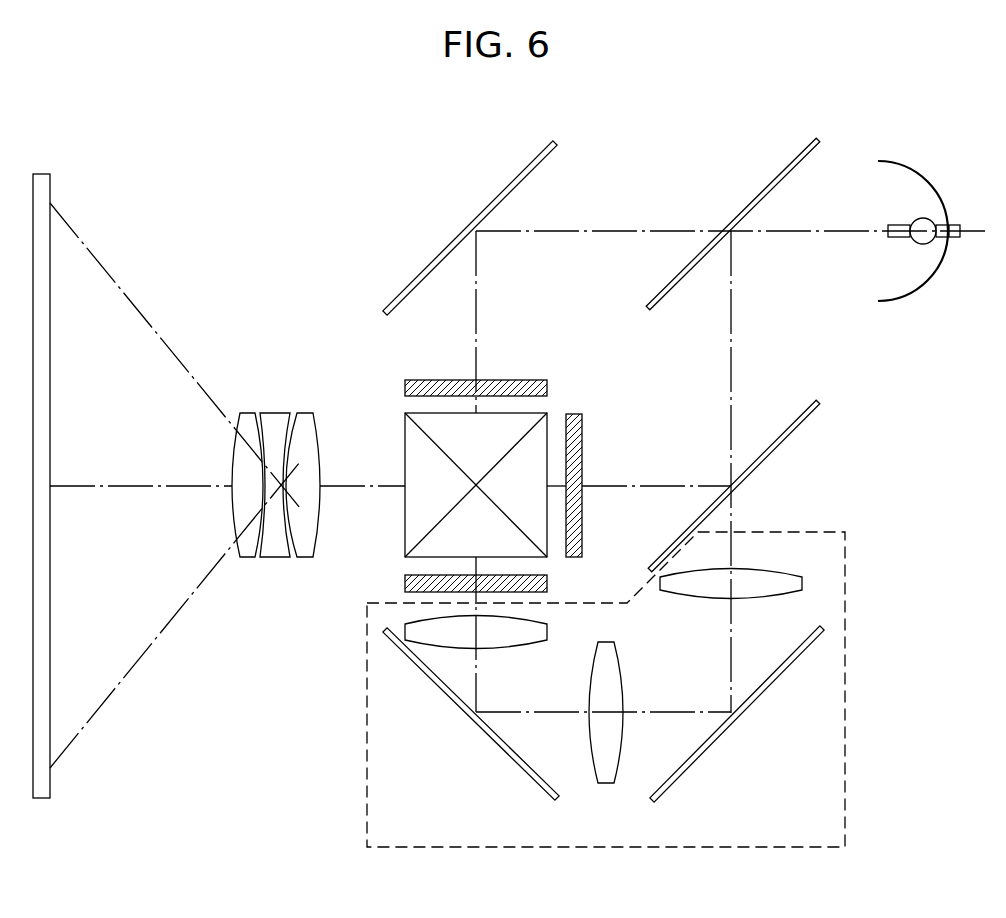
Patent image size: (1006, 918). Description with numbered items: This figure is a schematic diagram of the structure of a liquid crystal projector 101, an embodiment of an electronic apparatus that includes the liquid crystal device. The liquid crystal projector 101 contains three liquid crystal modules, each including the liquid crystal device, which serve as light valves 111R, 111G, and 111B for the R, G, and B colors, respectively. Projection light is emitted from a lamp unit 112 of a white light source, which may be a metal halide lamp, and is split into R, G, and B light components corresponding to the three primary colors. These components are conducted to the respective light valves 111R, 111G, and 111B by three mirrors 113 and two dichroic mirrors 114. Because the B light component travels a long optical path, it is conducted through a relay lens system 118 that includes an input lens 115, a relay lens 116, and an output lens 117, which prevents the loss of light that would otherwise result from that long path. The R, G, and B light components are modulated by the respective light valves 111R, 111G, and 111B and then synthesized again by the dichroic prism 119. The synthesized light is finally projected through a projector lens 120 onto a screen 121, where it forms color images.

The liquid crystal projector 101 is at (950, 116).
The lamp unit 112 is at (924, 286).
The mirrors 113 is at (497, 190).
The dichroic mirrors 114 is at (758, 190).
The input lens 115 is at (689, 600).
The relay lens 116 is at (607, 778).
The output lens 117 is at (518, 641).
The relay lens system 118 is at (846, 713).
The dichroic prism 119 is at (404, 462).
The projector lens 120 is at (315, 400).
The screen 121 is at (41, 174).
The light valve for R color 111R is at (404, 387).
The light valve for G color 111G is at (583, 457).
The light valve for B color 111B is at (404, 582).